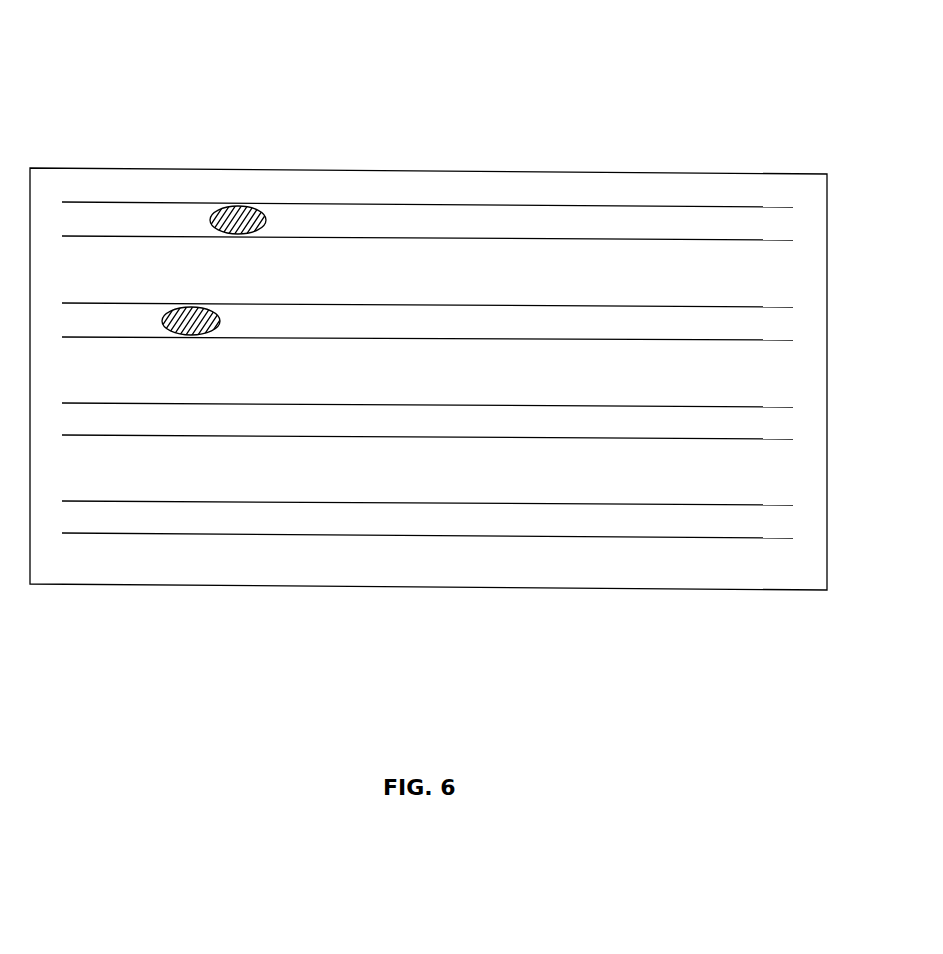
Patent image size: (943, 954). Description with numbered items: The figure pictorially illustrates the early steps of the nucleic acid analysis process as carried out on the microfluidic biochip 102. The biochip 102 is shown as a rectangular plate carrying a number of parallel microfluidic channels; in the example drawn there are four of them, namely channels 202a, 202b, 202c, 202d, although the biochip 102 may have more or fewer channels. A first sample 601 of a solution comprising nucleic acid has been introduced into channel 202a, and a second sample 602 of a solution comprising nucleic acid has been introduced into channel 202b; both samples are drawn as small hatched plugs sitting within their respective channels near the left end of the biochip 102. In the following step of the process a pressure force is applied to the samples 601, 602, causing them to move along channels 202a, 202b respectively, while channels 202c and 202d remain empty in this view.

The biochip 102 is at (80, 61).
The channel 202a is at (427, 166).
The channel 202b is at (427, 310).
The channel 202c is at (427, 405).
The channel 202d is at (427, 506).
The sample 601 is at (226, 215).
The sample 602 is at (188, 313).